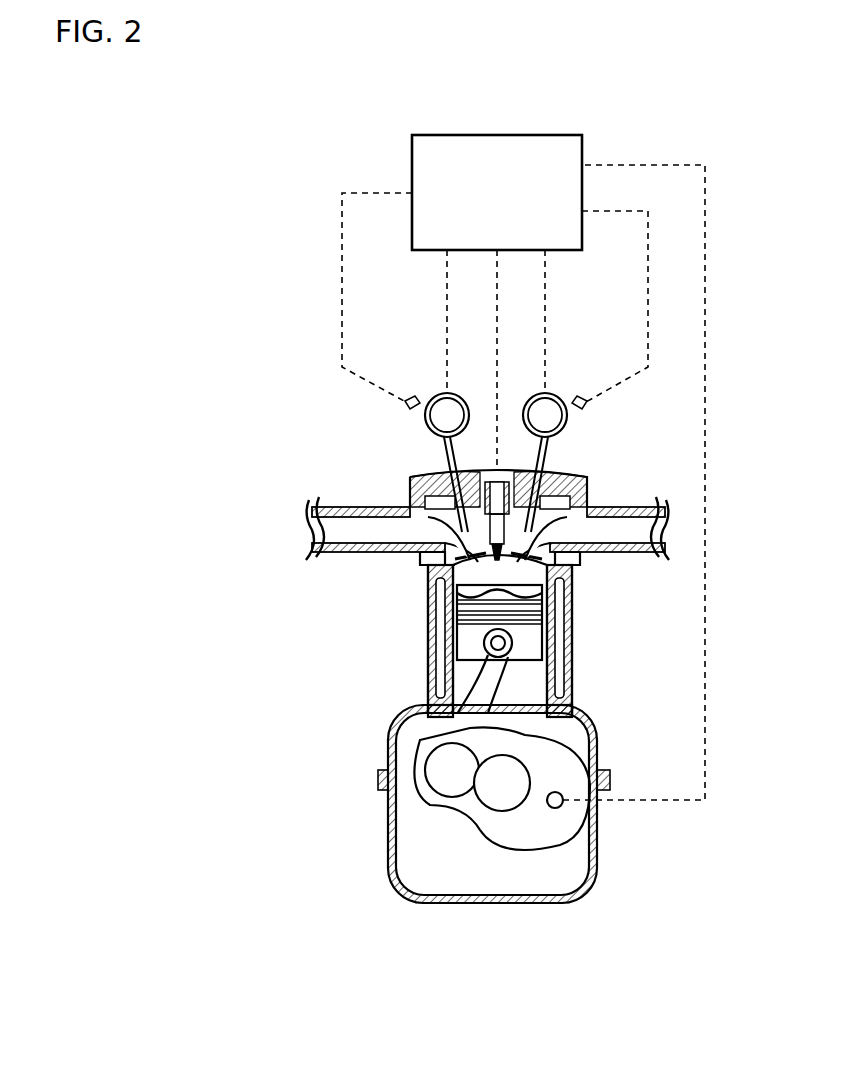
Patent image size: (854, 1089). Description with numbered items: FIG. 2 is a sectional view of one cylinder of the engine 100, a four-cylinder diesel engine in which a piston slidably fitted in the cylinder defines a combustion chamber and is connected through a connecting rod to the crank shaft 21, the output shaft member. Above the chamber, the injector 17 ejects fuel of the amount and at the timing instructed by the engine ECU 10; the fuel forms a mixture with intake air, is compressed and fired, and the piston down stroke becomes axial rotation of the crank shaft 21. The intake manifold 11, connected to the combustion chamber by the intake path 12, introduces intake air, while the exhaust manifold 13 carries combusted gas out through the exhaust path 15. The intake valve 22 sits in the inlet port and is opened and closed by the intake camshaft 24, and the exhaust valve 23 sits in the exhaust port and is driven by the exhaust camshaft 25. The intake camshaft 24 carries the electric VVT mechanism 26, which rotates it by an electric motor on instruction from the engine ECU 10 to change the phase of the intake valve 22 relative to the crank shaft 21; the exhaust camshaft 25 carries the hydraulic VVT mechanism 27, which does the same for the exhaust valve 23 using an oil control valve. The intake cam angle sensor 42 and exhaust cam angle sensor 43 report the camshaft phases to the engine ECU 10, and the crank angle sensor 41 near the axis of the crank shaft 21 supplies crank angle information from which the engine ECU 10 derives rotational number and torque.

The engine 100 is at (283, 332).
The engine ECU 10 is at (412, 137).
The intake manifold 11 is at (365, 508).
The intake path 12 is at (442, 492).
The exhaust manifold 13 is at (624, 508).
The exhaust path 15 is at (605, 492).
The injector 17 is at (503, 472).
The crank shaft 21 is at (512, 780).
The intake valve 22 is at (445, 460).
The exhaust valve 23 is at (548, 460).
The intake camshaft 24 is at (440, 398).
The exhaust camshaft 25 is at (552, 398).
The electric VVT mechanism 26 is at (420, 321).
The hydraulic VVT mechanism 27 is at (570, 321).
The crank angle sensor 41 is at (560, 806).
The intake cam angle sensor 42 is at (408, 409).
The exhaust cam angle sensor 43 is at (584, 409).